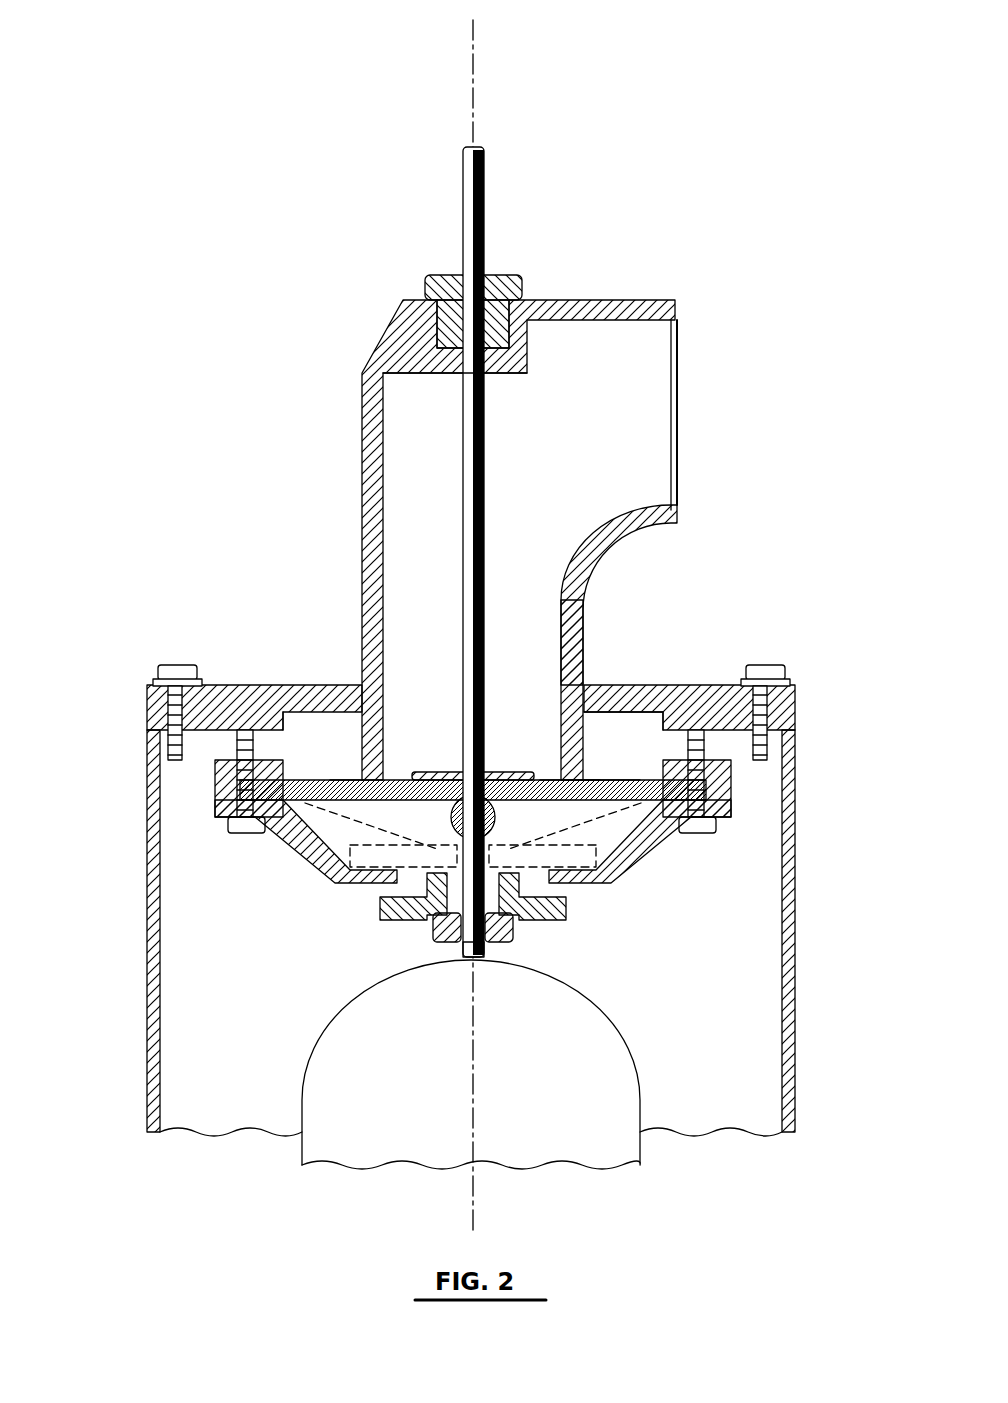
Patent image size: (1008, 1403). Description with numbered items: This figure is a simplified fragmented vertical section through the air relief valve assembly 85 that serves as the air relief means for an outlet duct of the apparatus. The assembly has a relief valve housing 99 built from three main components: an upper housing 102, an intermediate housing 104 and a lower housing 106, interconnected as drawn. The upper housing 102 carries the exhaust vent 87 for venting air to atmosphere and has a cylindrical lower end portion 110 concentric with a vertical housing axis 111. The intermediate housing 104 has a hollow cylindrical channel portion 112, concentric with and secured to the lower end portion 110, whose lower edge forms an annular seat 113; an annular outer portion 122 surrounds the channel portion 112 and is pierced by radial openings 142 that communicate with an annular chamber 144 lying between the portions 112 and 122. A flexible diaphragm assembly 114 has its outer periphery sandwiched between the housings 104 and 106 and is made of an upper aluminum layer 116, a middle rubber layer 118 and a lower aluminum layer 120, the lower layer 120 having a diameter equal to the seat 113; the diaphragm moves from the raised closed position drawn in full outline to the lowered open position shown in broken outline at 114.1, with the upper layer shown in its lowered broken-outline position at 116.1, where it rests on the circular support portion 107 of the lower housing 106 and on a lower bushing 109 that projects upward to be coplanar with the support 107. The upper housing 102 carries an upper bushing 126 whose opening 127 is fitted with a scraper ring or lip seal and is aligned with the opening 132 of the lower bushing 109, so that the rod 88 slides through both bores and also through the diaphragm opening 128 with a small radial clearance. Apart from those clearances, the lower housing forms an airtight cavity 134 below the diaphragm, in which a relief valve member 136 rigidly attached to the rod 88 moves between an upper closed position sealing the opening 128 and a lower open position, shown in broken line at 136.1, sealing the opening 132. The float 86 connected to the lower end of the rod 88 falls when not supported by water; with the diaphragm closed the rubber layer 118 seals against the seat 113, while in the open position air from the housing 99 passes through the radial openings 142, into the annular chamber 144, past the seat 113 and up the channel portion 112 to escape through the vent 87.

The air relief valve assembly 85 is at (312, 466).
The float 86 is at (618, 1022).
The exhaust vent 87 is at (640, 420).
The rod 88 is at (488, 488).
The relief valve housing 99 is at (213, 615).
The upper housing 102 is at (656, 522).
The intermediate housing 104 is at (332, 684).
The lower housing 106 is at (607, 893).
The circular support portion 107 is at (345, 893).
The lower bushing 109 is at (516, 925).
The lower end portion 110 is at (362, 635).
The vertical housing axis 111 is at (464, 106).
The hollow cylindrical channel portion 112 is at (385, 735).
The annular seat 113 is at (576, 775).
The flexible diaphragm assembly 114 is at (342, 772).
The lowered open position of diaphragm 114.1 is at (614, 865).
The upper aluminum layer 116 is at (434, 772).
The arm 116.1 is at (433, 844).
The middle rubber layer 118 is at (546, 780).
The lower aluminum layer 120 is at (588, 846).
The annular outer portion 122 is at (730, 793).
The upper bushing 126 is at (434, 286).
The opening of upper bushing 127 is at (466, 292).
The diaphragm opening 128 is at (498, 771).
The opening of lower bushing 132 is at (490, 950).
The airtight cavity 134 is at (358, 846).
The relief valve member 136 is at (496, 815).
The lower open position of valve member 136.1 is at (431, 925).
The radial openings 142 is at (246, 745).
The annular chamber 144 is at (614, 728).